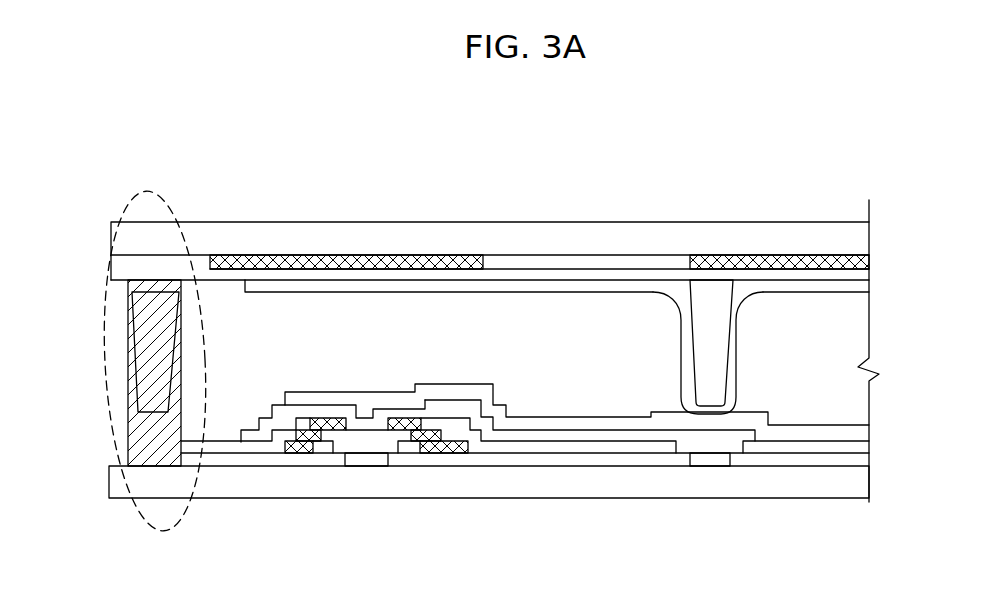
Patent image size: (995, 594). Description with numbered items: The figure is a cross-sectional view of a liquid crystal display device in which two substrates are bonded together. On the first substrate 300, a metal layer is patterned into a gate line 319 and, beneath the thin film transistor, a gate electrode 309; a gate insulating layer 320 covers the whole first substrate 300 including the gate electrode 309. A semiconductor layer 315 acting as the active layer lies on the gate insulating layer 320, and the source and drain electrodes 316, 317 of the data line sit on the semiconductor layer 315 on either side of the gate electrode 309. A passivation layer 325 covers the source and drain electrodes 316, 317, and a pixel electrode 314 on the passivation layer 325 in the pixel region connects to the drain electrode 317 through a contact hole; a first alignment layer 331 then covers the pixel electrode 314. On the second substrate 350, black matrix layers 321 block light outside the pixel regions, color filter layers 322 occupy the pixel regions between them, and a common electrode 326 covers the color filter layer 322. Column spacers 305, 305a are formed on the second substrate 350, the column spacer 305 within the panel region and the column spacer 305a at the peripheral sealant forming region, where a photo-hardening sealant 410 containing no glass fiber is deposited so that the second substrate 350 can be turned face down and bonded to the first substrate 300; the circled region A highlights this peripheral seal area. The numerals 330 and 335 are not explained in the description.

The enlarged region A is at (131, 190).
The first substrate 300 is at (820, 490).
The column spacer 305 is at (713, 342).
The column spacer 305a is at (160, 314).
The gate electrode 309 is at (362, 456).
The pixel electrode 314 is at (645, 433).
The semiconductor layer 315 is at (318, 432).
The source electrode 316 is at (295, 446).
The drain electrode 317 is at (421, 442).
The gate line 319 is at (716, 456).
The gate insulating layer 320 is at (540, 440).
The black matrix layer 321 is at (286, 254).
The color filter layer 322 is at (507, 262).
The passivation layer 325 is at (427, 418).
The common electrode 326 is at (557, 277).
The passivation layer 330 is at (597, 372).
The first alignment layer 331 is at (852, 438).
The common electrode 335 is at (853, 284).
The second substrate 350 is at (355, 228).
The photo-hardening sealant 410 is at (153, 464).